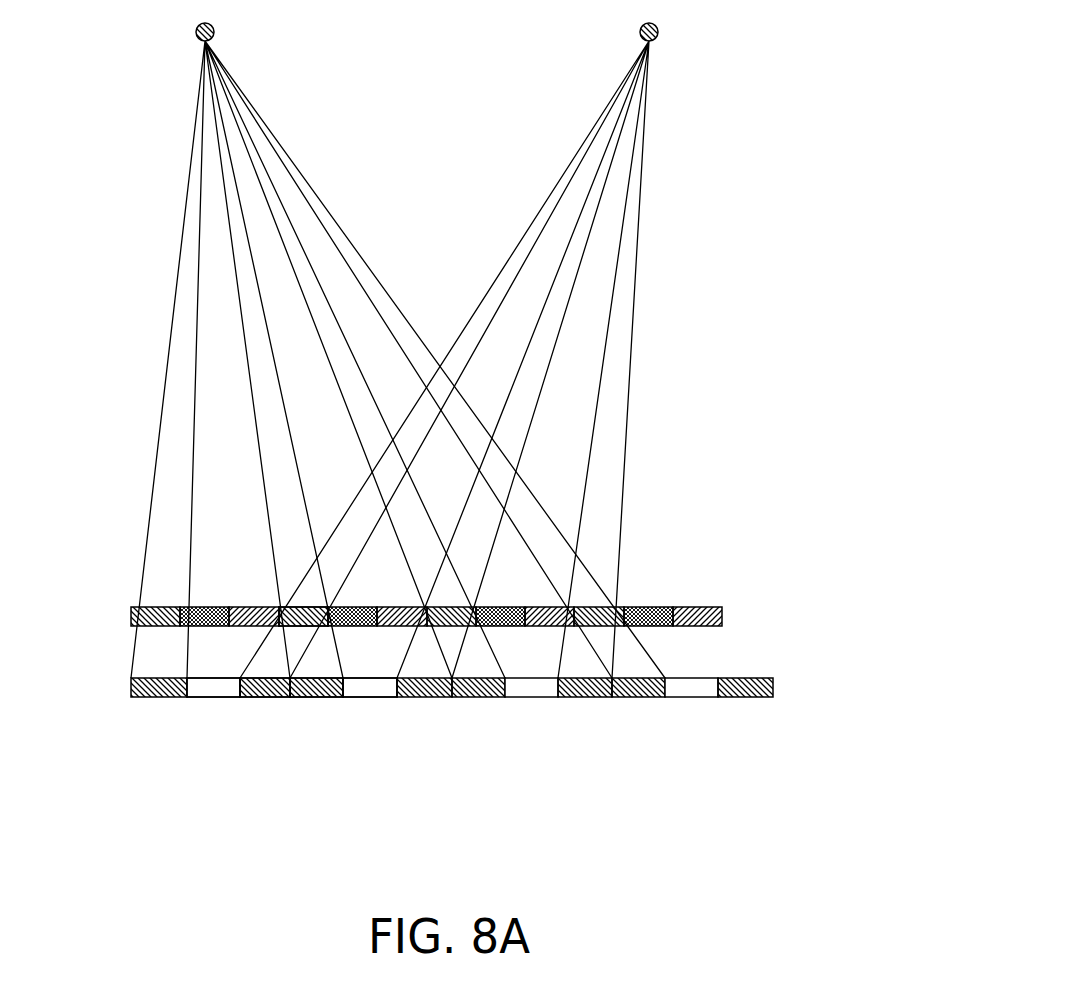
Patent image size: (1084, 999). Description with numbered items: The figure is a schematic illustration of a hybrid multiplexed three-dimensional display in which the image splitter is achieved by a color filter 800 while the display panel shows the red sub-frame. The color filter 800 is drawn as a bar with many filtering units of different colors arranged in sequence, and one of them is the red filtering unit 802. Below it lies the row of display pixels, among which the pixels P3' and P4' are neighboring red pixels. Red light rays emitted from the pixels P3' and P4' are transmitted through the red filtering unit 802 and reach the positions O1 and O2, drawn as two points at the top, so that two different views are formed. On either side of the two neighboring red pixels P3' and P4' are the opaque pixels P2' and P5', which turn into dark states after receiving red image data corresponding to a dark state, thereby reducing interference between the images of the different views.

The color filter 800 is at (722, 615).
The red filtering unit 802 is at (318, 607).
The position O1 is at (398, 340).
The position O2 is at (452, 340).
The opaque pixel P2' is at (213, 710).
The pixel P3' is at (265, 710).
The pixel P4' is at (316, 710).
The opaque pixel P5' is at (370, 710).